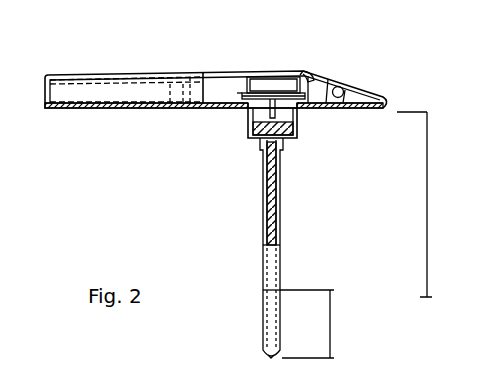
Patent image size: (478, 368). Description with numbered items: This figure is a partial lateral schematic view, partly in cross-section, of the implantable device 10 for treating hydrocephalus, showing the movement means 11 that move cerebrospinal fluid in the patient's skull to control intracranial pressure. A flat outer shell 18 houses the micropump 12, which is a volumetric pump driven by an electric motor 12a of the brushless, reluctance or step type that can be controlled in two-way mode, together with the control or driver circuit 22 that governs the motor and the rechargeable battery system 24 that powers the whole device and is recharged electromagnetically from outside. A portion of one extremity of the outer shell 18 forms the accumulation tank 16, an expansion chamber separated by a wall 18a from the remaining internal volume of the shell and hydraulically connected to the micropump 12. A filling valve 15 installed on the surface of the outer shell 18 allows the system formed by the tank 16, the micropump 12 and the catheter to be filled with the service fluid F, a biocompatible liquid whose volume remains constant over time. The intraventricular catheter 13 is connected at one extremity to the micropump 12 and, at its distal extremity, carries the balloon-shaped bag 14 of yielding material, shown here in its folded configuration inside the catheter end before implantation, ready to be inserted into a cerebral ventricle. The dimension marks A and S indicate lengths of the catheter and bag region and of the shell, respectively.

The implantable device 10 is at (393, 75).
The movement means 11 is at (330, 78).
The micropump 12 is at (243, 118).
The electric motor 12a is at (243, 97).
The intraventricular catheter 13 is at (280, 212).
The balloon-shaped bag 14 is at (266, 357).
The filling valve 15 is at (342, 88).
The accumulation tank 16 is at (326, 89).
The flat outer shell 18 is at (57, 77).
The wall 18a is at (315, 77).
The control or driver circuit 22 is at (257, 82).
The rechargeable battery system 24 is at (98, 88).
The service fluid F is at (266, 187).
The dimension A is at (330, 327).
The dimension S is at (427, 232).